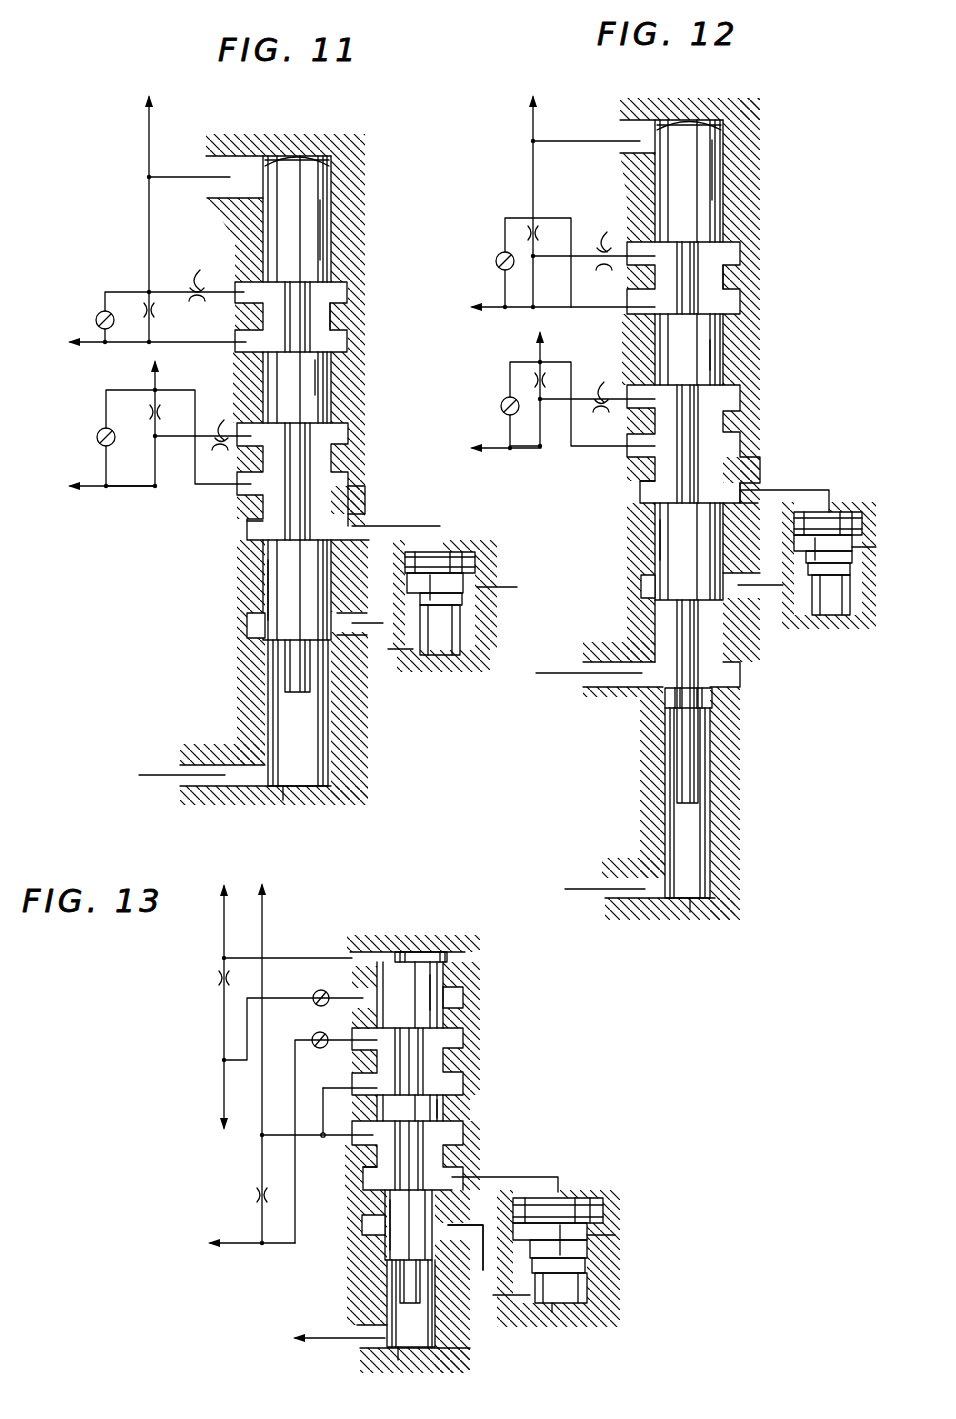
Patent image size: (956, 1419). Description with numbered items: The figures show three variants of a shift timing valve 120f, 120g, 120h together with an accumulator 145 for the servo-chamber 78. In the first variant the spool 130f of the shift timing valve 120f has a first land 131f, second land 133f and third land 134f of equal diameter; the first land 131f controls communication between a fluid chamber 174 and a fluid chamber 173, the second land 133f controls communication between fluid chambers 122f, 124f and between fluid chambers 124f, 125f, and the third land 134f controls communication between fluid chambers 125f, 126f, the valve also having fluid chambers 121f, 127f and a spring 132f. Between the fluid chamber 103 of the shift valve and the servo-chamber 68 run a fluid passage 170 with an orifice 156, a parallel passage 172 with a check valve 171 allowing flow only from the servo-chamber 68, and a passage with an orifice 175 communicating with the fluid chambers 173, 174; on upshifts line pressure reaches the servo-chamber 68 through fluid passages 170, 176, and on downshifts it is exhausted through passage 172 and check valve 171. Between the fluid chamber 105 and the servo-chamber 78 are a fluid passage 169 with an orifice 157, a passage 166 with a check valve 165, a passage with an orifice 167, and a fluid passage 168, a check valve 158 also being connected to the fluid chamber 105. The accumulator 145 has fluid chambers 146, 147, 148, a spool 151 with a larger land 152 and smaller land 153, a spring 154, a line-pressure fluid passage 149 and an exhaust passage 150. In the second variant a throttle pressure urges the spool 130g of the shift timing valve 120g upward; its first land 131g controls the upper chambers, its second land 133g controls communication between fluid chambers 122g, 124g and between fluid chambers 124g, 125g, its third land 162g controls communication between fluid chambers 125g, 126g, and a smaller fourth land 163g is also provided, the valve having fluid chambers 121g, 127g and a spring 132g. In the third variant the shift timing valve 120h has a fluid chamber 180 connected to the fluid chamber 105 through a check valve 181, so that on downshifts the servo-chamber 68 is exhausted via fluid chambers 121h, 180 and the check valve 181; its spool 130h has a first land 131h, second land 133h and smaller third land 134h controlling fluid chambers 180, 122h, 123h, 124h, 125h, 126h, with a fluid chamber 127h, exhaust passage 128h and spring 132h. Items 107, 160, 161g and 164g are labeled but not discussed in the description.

In FIG. 11, the servo-chamber 68 is at (183, 206).
In FIG. 12, the servo-chamber 68 is at (580, 190).
In FIG. 13, the servo-chamber 68 is at (279, 994).
In FIG. 11, the servo-chamber 78 is at (172, 421).
In FIG. 12, the servo-chamber 78 is at (554, 380).
In FIG. 13, the servo-chamber 78 is at (260, 1052).
In FIG. 11, the fluid chamber 103 is at (136, 341).
In FIG. 12, the fluid chamber 103 is at (542, 306).
In FIG. 13, the fluid chamber 103 is at (290, 1121).
In FIG. 11, the fluid chamber 105 is at (91, 485).
In FIG. 12, the fluid chamber 105 is at (485, 447).
In FIG. 13, the fluid chamber 105 is at (225, 1242).
In FIG. 13, the drain line 107 is at (311, 1337).
In FIG. 11, the shift timing valve 120f is at (321, 122).
In FIG. 12, the shift timing valve 120g is at (732, 85).
In FIG. 13, the shift timing valve 120h is at (482, 920).
In FIG. 11, the fluid chamber 121f is at (322, 158).
In FIG. 12, the fluid chamber 121g is at (723, 125).
In FIG. 13, the fluid chamber 121h is at (450, 957).
In FIG. 11, the fluid chamber 122f is at (340, 438).
In FIG. 12, the fluid chamber 122g is at (738, 397).
In FIG. 13, the fluid chamber 122h is at (455, 1036).
In FIG. 13, the fluid chamber 123h is at (455, 1080).
In FIG. 11, the fluid chamber 124f is at (352, 490).
In FIG. 12, the fluid chamber 124g is at (744, 449).
In FIG. 13, the fluid chamber 124h is at (457, 1134).
In FIG. 11, the fluid chamber 125f is at (247, 528).
In FIG. 12, the fluid chamber 125g is at (640, 490).
In FIG. 13, the fluid chamber 125h is at (363, 1180).
In FIG. 11, the fluid chamber 126f is at (247, 632).
In FIG. 12, the fluid chamber 126g is at (641, 582).
In FIG. 13, the fluid chamber 126h is at (362, 1226).
In FIG. 11, the fluid chamber 127f is at (308, 732).
In FIG. 12, the fluid chamber 127g is at (690, 812).
In FIG. 13, the fluid chamber 127h is at (413, 1318).
In FIG. 13, the exhaust passage 128h is at (492, 1228).
In FIG. 11, the spool 130f is at (309, 200).
In FIG. 12, the spool 130g is at (670, 172).
In FIG. 13, the spool 130h is at (399, 978).
In FIG. 11, the first land 131f is at (320, 232).
In FIG. 12, the first land 131g is at (715, 158).
In FIG. 13, the first land 131h is at (432, 978).
In FIG. 11, the spring 132f is at (283, 790).
In FIG. 12, the spring 132g is at (690, 902).
In FIG. 13, the spring 132h is at (399, 1352).
In FIG. 11, the second land 133f is at (318, 385).
In FIG. 12, the second land 133g is at (718, 353).
In FIG. 13, the second land 133h is at (440, 1108).
In FIG. 11, the third land 134f is at (270, 576).
In FIG. 13, the third land 134h is at (387, 1252).
In FIG. 11, the accumulator 145 is at (482, 523).
In FIG. 12, the accumulator 145 is at (868, 477).
In FIG. 13, the accumulator 145 is at (609, 1183).
In FIG. 11, the fluid chamber 146 is at (475, 558).
In FIG. 12, the fluid chamber 146 is at (862, 516).
In FIG. 13, the fluid chamber 146 is at (603, 1210).
In FIG. 11, the fluid chamber 147 is at (477, 580).
In FIG. 12, the fluid chamber 147 is at (862, 543).
In FIG. 13, the fluid chamber 147 is at (588, 1231).
In FIG. 11, the fluid chamber 148 is at (445, 637).
In FIG. 12, the fluid chamber 148 is at (850, 596).
In FIG. 13, the fluid chamber 148 is at (580, 1295).
In FIG. 13, the fluid passage 149 is at (600, 1240).
In FIG. 13, the exhaust passage 150 is at (499, 1286).
In FIG. 11, the spool 151 is at (430, 586).
In FIG. 12, the spool 151 is at (815, 542).
In FIG. 13, the spool 151 is at (560, 1237).
In FIG. 13, the land 152 is at (532, 1200).
In FIG. 13, the land 153 is at (587, 1267).
In FIG. 13, the spring 154 is at (552, 1308).
In FIG. 11, the orifice 156 is at (156, 311).
In FIG. 12, the orifice 156 is at (539, 233).
In FIG. 13, the orifice 156 is at (196, 977).
In FIG. 11, the orifice 157 is at (137, 411).
In FIG. 12, the orifice 157 is at (536, 370).
In FIG. 13, the orifice 157 is at (235, 1187).
In FIG. 13, the check valve 158 is at (313, 1035).
In FIG. 11, the valve housing 160 is at (158, 778).
In FIG. 12, the valve housing 160 is at (587, 892).
In FIG. 12, the bore 161g is at (660, 612).
In FIG. 12, the third land 162g is at (658, 540).
In FIG. 12, the fourth land 163g is at (712, 700).
In FIG. 12, the passage 164g is at (550, 676).
In FIG. 11, the check valve 165 is at (97, 438).
In FIG. 12, the check valve 165 is at (501, 406).
In FIG. 11, the passage 166 is at (106, 398).
In FIG. 12, the passage 166 is at (510, 375).
In FIG. 11, the orifice 167 is at (203, 417).
In FIG. 12, the orifice 167 is at (597, 378).
In FIG. 11, the fluid passage 168 is at (227, 451).
In FIG. 12, the fluid passage 168 is at (606, 413).
In FIG. 11, the fluid passage 169 is at (110, 490).
In FIG. 12, the fluid passage 169 is at (512, 450).
In FIG. 11, the fluid passage 170 is at (154, 298).
In FIG. 12, the fluid passage 170 is at (547, 258).
In FIG. 11, the check valve 171 is at (96, 316).
In FIG. 12, the check valve 171 is at (497, 257).
In FIG. 11, the passage 172 is at (118, 292).
In FIG. 12, the passage 172 is at (505, 218).
In FIG. 11, the fluid chamber 173 is at (340, 336).
In FIG. 11, the fluid chamber 174 is at (340, 286).
In FIG. 11, the orifice 175 is at (207, 268).
In FIG. 12, the orifice 175 is at (600, 224).
In FIG. 11, the fluid passage 176 is at (226, 298).
In FIG. 12, the fluid passage 176 is at (626, 258).
In FIG. 13, the fluid chamber 180 is at (464, 997).
In FIG. 13, the check valve 181 is at (315, 992).